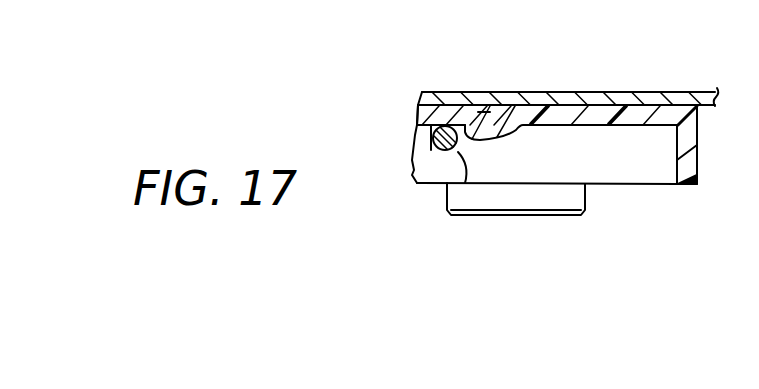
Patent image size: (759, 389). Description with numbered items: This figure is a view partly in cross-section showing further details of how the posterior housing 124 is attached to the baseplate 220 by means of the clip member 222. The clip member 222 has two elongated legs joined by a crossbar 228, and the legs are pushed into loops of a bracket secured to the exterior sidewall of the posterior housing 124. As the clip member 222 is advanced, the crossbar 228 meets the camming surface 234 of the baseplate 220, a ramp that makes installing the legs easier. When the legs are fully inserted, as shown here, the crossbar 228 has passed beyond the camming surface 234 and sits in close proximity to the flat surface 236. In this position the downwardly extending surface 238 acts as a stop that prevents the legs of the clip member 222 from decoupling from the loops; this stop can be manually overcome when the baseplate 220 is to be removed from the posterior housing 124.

The posterior housing 124 is at (632, 93).
The baseplate 220 is at (602, 115).
The clip member 222 is at (429, 147).
The crossbar 228 is at (449, 192).
The camming surface 234 is at (505, 105).
The flat surface 236 is at (425, 122).
The downwardly extending surface 238 is at (483, 112).